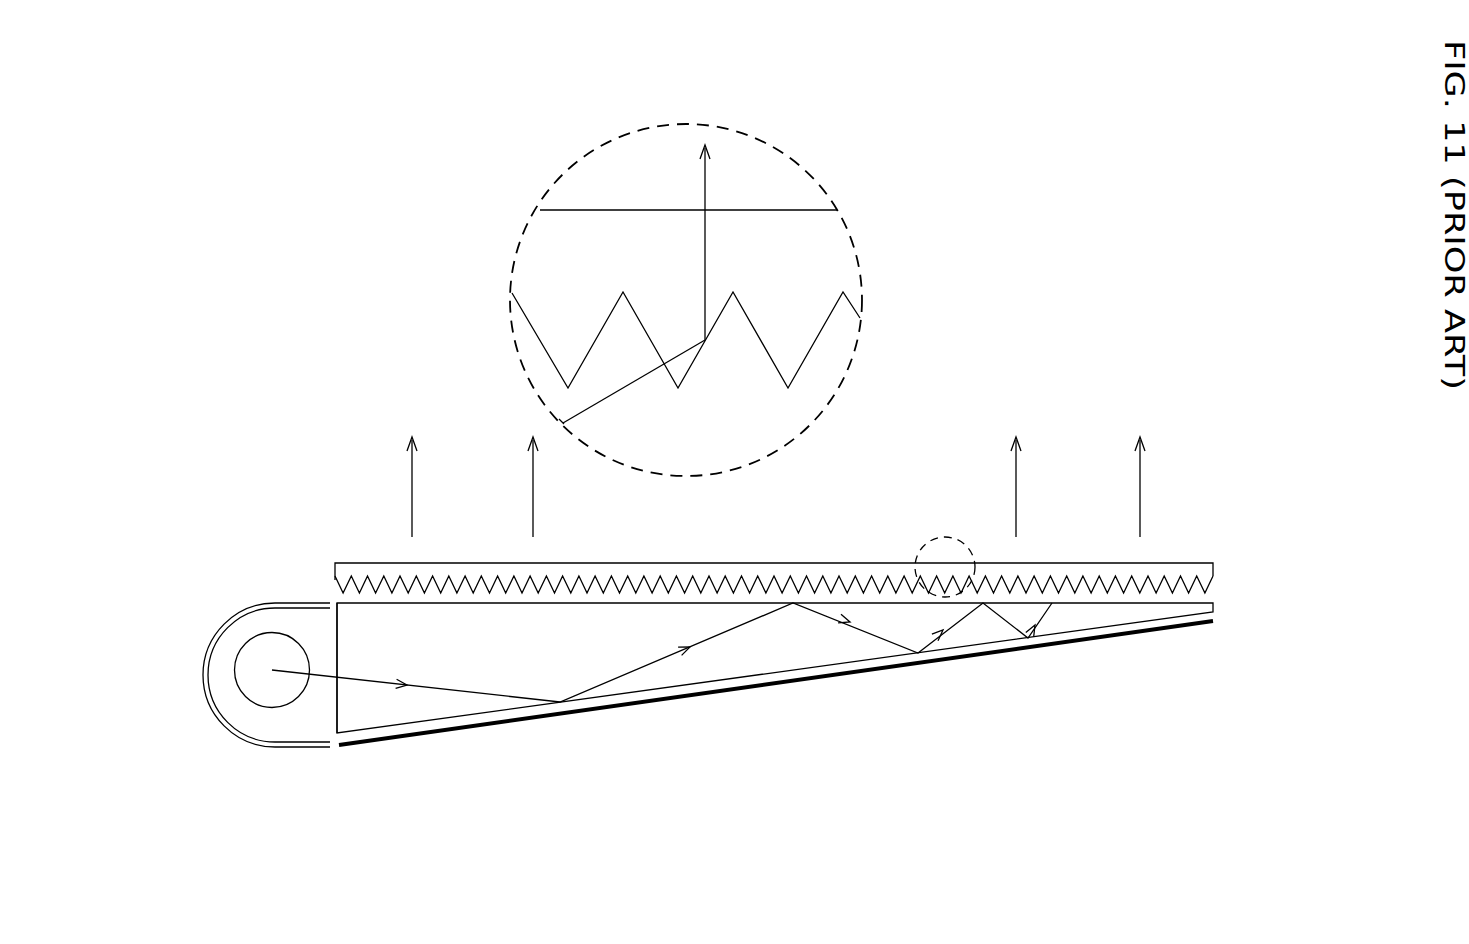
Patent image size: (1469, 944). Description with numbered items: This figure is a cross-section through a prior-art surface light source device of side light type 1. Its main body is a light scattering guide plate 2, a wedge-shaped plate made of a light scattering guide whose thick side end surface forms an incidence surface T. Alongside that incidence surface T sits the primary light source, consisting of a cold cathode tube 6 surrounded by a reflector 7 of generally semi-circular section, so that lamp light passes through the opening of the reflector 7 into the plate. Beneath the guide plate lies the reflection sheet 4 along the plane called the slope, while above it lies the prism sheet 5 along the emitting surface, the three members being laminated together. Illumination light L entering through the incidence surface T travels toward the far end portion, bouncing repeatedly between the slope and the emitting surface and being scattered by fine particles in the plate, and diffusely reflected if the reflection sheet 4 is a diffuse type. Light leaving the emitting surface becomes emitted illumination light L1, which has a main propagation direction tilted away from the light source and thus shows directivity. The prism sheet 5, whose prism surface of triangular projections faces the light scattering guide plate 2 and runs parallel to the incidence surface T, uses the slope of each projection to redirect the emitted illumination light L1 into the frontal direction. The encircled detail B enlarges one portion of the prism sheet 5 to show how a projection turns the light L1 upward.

The surface light source device of side light type 1 is at (722, 468).
The light scattering guide plate 2 is at (742, 658).
The reflection sheet 4 is at (893, 663).
The prism sheet 5 is at (652, 563).
The cold cathode tube 6 is at (282, 698).
The reflector 7 is at (218, 718).
The incidence surface T is at (338, 665).
The illumination light L is at (468, 693).
The emitted illumination light L1 is at (1140, 503).
The enlarged portion of prism sheet B is at (807, 453).